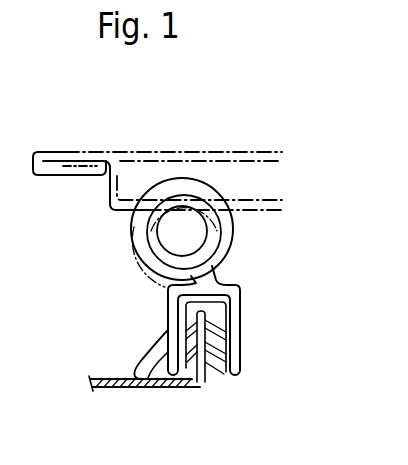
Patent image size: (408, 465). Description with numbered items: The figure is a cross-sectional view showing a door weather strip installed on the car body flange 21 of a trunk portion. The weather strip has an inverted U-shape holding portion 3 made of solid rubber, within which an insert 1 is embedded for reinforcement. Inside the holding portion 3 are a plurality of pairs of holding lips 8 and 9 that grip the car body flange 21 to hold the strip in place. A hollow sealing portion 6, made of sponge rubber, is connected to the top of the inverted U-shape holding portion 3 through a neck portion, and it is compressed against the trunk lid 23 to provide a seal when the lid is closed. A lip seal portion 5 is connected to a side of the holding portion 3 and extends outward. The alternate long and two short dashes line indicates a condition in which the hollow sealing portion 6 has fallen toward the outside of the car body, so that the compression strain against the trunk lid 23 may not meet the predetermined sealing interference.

The insert 1 is at (236, 337).
The inverted U-shape holding portion 3 is at (240, 286).
The lip seal portion 5 is at (137, 388).
The hollow sealing portion 6 is at (224, 228).
The holding lip 8 is at (184, 316).
The holding lip 9 is at (201, 382).
The car body flange 21 is at (218, 380).
The trunk lid 23 is at (133, 152).